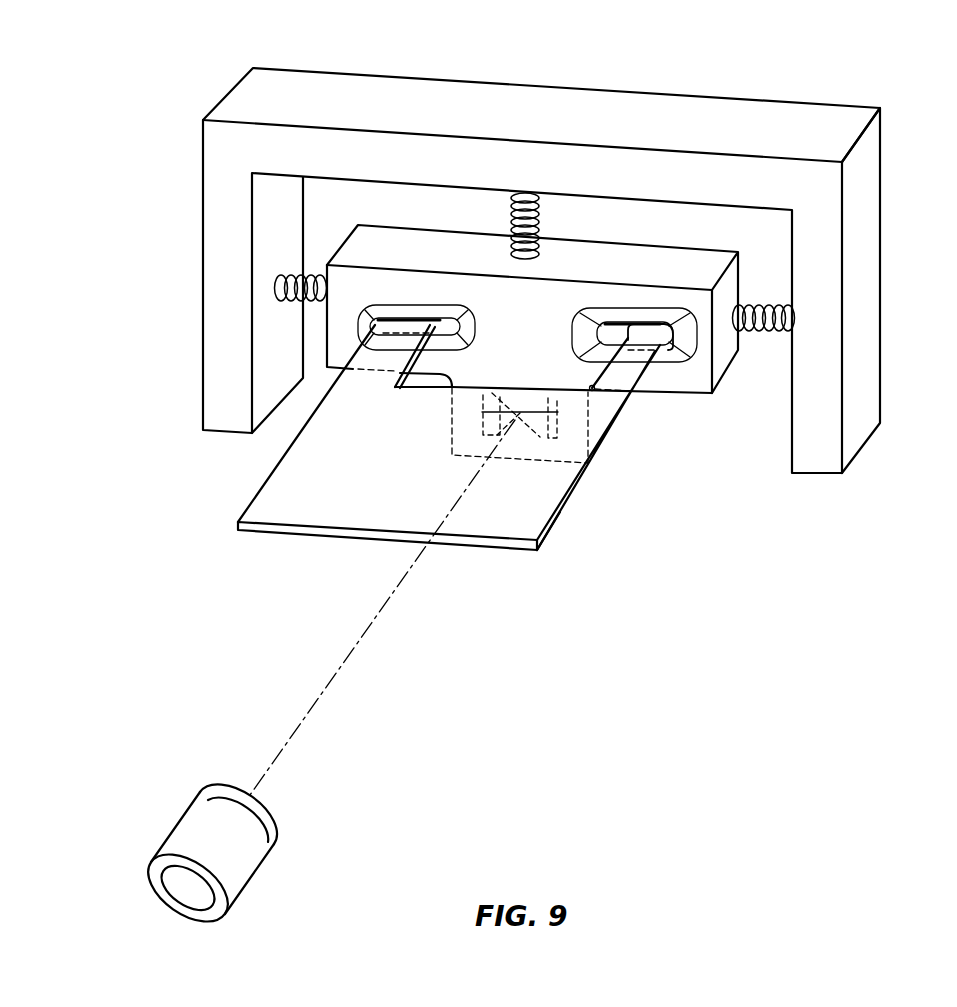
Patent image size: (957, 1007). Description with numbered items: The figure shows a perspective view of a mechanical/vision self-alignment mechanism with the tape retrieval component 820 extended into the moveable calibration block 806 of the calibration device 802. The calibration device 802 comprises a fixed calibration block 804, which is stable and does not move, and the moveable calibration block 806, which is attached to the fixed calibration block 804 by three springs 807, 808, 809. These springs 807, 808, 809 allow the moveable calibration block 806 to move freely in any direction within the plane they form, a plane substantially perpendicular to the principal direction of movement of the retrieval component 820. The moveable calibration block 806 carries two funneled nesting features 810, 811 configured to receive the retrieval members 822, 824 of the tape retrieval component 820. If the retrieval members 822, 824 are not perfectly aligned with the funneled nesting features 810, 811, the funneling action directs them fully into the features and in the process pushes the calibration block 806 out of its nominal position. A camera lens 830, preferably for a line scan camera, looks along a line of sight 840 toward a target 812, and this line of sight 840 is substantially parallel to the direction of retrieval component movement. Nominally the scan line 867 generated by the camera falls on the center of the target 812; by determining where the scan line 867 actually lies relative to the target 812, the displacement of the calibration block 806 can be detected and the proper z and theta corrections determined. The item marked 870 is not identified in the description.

The calibration device 802 is at (574, 257).
The fixed calibration block 804 is at (862, 262).
The moveable calibration block 806 is at (547, 293).
The spring 807 is at (283, 266).
The spring 808 is at (542, 217).
The spring 809 is at (766, 333).
The funneled nesting feature 810 is at (613, 323).
The funneled nesting feature 811 is at (440, 314).
The target 812 is at (542, 452).
The tape retrieval component 820 is at (428, 457).
The retrieval member 822 is at (386, 354).
The retrieval member 824 is at (653, 373).
The camera lens 830 is at (237, 863).
The line of sight 840 is at (376, 639).
The scan line 867 is at (496, 410).
The pivot point 870 is at (520, 413).